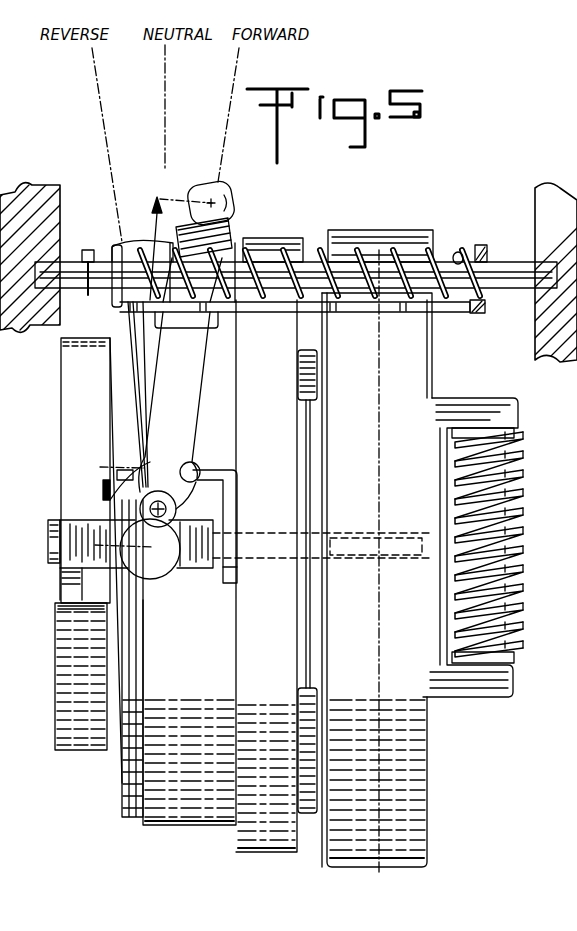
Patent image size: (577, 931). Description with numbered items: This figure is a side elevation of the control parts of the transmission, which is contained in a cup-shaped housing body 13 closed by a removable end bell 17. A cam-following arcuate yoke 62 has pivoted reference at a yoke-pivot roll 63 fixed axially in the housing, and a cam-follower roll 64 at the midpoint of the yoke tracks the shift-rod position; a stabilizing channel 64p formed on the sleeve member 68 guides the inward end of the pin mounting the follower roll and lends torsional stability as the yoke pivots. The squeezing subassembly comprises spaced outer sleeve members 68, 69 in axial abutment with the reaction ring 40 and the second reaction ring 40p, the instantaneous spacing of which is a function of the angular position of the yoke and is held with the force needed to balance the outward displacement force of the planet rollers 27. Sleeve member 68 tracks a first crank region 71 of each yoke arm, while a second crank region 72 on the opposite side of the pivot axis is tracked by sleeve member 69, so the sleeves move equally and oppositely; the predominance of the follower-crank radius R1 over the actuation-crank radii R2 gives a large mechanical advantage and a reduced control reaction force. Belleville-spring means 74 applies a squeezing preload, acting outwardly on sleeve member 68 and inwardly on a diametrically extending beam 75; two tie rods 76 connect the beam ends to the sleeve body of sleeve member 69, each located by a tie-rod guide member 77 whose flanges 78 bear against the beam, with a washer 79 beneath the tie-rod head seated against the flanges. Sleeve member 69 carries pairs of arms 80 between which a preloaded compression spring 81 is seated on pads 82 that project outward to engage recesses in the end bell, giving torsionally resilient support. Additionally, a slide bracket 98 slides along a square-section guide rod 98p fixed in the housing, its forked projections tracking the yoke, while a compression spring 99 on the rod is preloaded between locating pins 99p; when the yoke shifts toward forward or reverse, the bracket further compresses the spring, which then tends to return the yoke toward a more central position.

The housing body 13 is at (36, 186).
The end bell 17 is at (548, 190).
The planet rollers 27 is at (304, 356).
The reaction ring 40 is at (262, 842).
The reaction ring 40p is at (342, 850).
The cam-following arcuate yoke 62 is at (205, 404).
The yoke-pivot roll 63 is at (178, 510).
The cam-follower roll 64 is at (213, 186).
The stabilizing channel 64p is at (174, 240).
The sleeve member 68 is at (182, 808).
The sleeve member 69 is at (362, 622).
The first crank region 71 is at (196, 480).
The second crank region 72 is at (165, 580).
The Belleville-spring means 74 is at (118, 789).
The beam 75 is at (72, 373).
The tie rod 76 is at (48, 540).
The tie-rod guide member 77 is at (185, 574).
The flanges 78 is at (68, 601).
The washer 79 is at (63, 575).
The arms 80 is at (515, 414).
The compression spring 81 is at (523, 521).
The pads 82 is at (523, 436).
The slide bracket 98 is at (305, 308).
The guide rod 98p is at (272, 257).
The compression spring 99 is at (262, 257).
The locating pins 99p is at (88, 250).
The follower-crank radius R1 is at (118, 421).
The actuation-crank radii R2 is at (137, 503).